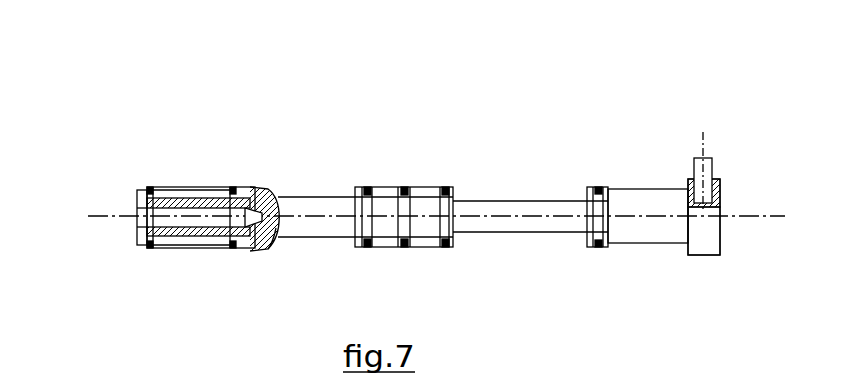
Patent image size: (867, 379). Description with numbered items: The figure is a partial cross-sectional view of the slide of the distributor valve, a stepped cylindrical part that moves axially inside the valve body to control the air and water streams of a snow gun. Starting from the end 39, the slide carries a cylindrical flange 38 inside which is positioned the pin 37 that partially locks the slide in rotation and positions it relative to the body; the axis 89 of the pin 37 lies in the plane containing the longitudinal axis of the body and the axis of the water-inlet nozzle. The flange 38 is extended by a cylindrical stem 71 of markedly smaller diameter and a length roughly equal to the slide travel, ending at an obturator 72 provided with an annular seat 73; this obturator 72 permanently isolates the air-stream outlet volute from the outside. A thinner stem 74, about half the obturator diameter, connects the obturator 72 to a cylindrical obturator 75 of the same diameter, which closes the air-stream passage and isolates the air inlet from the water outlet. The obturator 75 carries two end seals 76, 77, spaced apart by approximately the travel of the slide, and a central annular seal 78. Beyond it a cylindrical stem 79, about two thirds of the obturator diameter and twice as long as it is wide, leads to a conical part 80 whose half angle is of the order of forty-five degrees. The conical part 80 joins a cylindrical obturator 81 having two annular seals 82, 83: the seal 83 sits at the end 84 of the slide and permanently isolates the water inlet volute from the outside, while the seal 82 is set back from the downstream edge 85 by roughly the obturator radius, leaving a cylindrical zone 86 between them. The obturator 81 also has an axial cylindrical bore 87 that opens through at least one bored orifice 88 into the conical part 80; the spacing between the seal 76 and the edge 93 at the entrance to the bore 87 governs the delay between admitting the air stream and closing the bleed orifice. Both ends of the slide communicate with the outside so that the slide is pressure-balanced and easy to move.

The pin 37 is at (713, 166).
The cylindrical flange 38 is at (703, 255).
The end of the slide 39 is at (722, 246).
The cylindrical stem 71 is at (641, 243).
The obturator 72 is at (597, 187).
The annular seat 73 is at (595, 247).
The stem 74 is at (513, 201).
The cylindrical obturator 75 is at (428, 180).
The annular seal 76 is at (443, 247).
The annular seal 77 is at (367, 247).
The central annular seal 78 is at (405, 187).
The cylindrical stem 79 is at (318, 197).
The conical part 80 is at (270, 195).
The cylindrical obturator 81 is at (195, 255).
The annular seal 82 is at (232, 249).
The annular seal 83 is at (148, 249).
The end of the slide 84 is at (138, 237).
The downstream edge 85 is at (264, 252).
The cylindrical zone 86 is at (250, 190).
The axial cylindrical bore 87 is at (180, 205).
The bored orifice 88 is at (266, 240).
The axis of the pin 89 is at (700, 147).
The edge at the entrance to the cylindrical cavity 93 is at (135, 210).